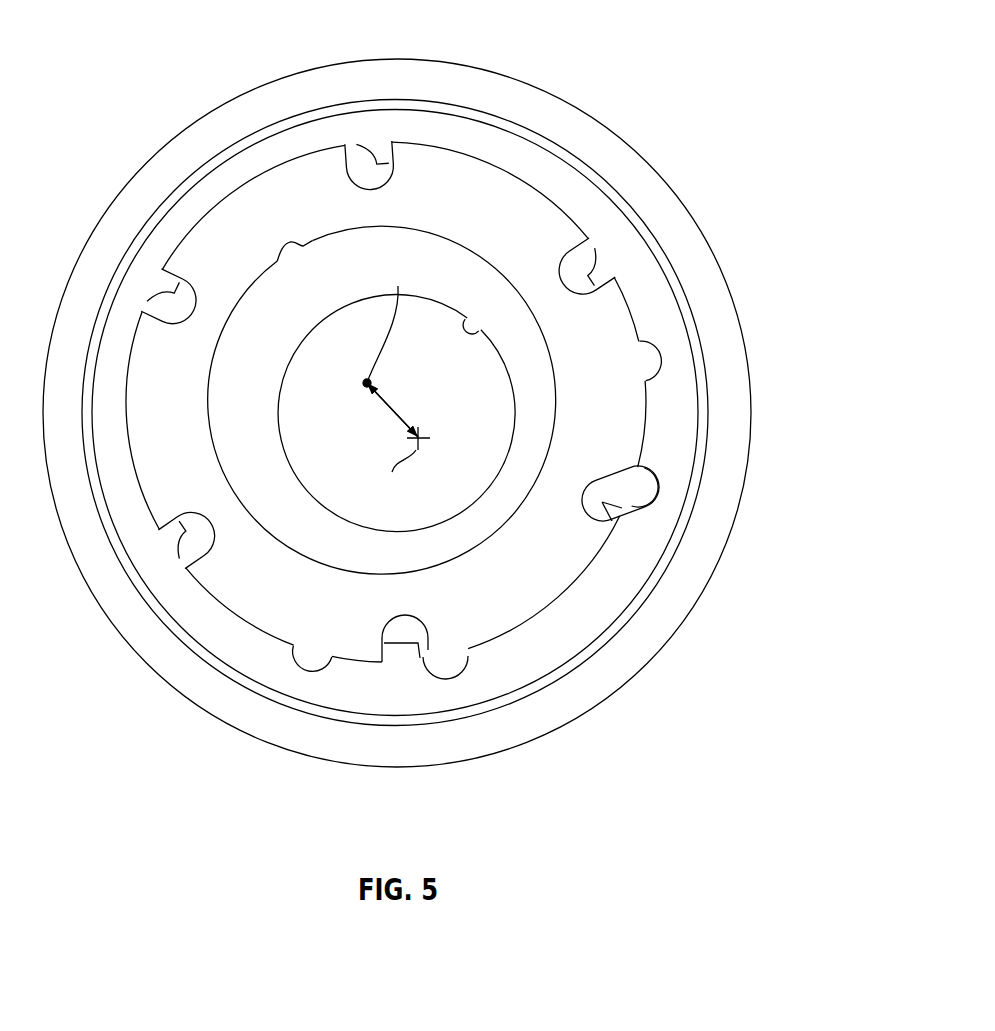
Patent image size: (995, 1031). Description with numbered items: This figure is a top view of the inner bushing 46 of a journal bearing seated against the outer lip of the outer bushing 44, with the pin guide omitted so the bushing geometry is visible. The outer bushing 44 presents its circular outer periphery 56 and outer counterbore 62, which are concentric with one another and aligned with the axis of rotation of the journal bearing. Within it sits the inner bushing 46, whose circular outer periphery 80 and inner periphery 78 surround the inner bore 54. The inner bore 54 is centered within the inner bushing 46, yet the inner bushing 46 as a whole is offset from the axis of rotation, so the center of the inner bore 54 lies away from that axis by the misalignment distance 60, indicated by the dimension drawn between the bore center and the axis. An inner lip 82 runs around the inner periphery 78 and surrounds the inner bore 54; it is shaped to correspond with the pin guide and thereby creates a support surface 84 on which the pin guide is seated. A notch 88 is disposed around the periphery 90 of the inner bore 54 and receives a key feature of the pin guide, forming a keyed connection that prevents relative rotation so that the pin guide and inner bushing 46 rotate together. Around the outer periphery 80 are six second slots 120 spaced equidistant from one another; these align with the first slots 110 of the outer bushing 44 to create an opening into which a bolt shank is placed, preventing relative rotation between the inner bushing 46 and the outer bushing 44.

The outer bushing 44 is at (594, 143).
The outer periphery 56 is at (503, 76).
The outer counterbore 62 is at (254, 140).
The outer periphery 80 is at (563, 212).
The inner bushing 46 is at (626, 358).
The second slots 120 is at (400, 168).
The first slots 110 is at (669, 360).
The support surface 84 is at (262, 407).
The inner bore 54 is at (555, 372).
The notch 88 is at (291, 236).
The periphery 90 is at (328, 240).
The inner lip 82 is at (272, 436).
The inner periphery 78 is at (480, 331).
The misalignment distance 60 is at (398, 412).